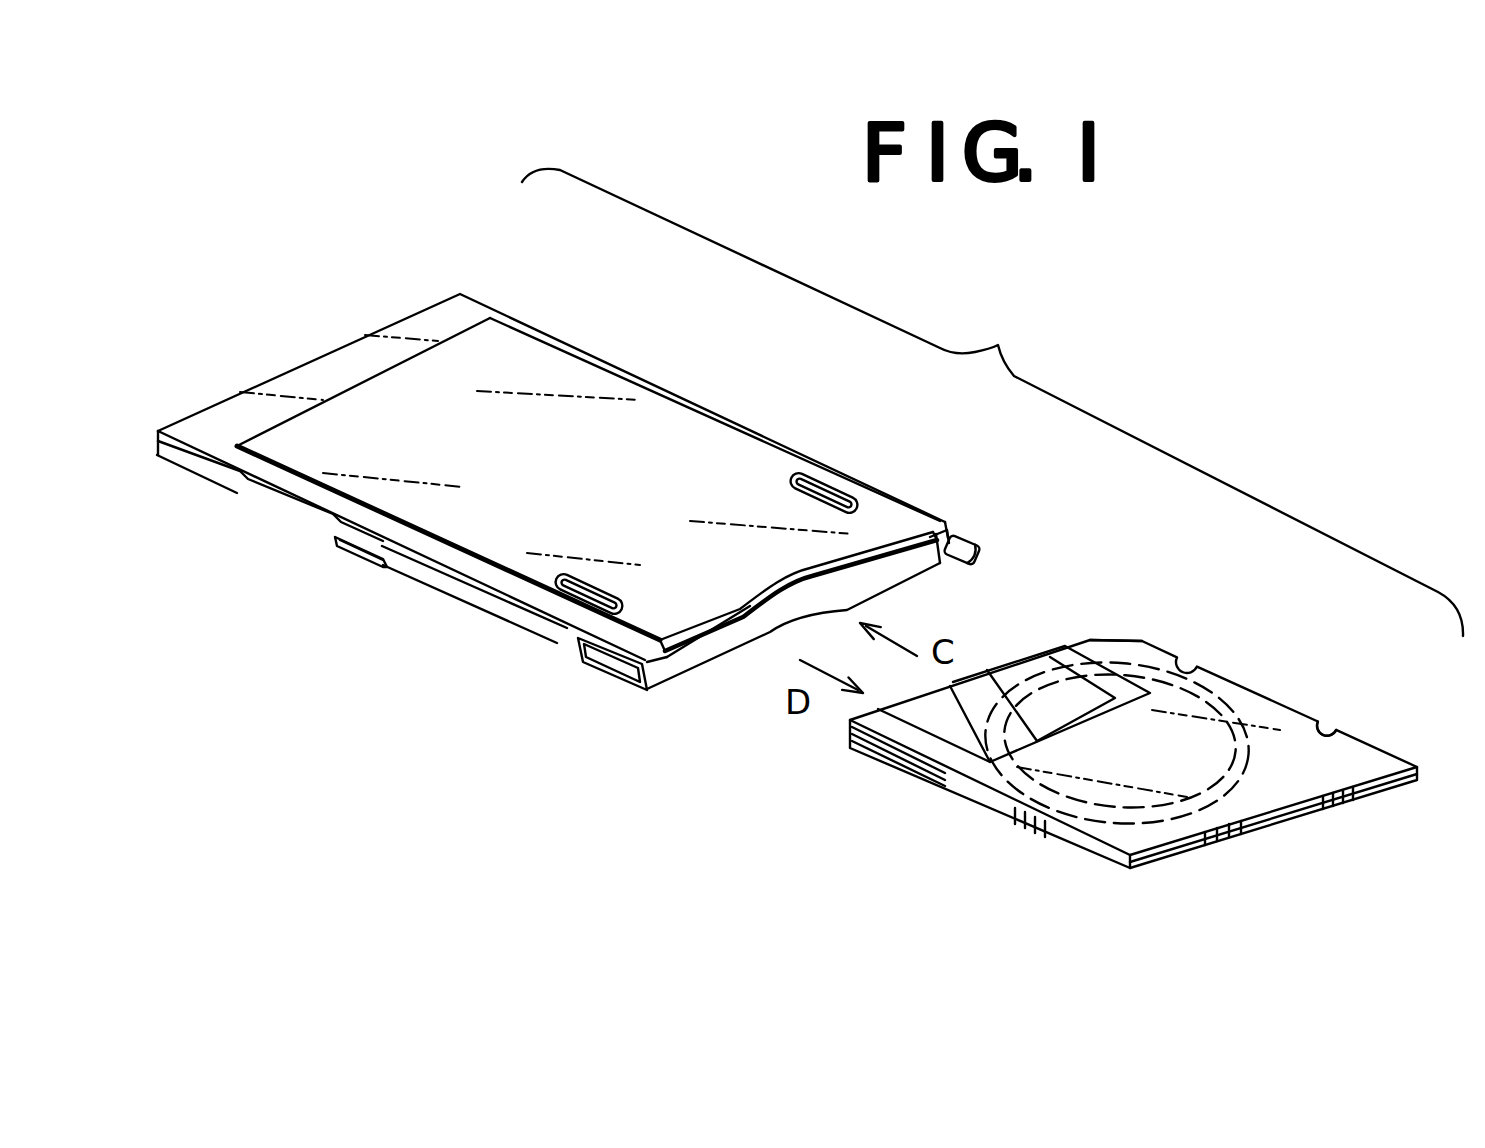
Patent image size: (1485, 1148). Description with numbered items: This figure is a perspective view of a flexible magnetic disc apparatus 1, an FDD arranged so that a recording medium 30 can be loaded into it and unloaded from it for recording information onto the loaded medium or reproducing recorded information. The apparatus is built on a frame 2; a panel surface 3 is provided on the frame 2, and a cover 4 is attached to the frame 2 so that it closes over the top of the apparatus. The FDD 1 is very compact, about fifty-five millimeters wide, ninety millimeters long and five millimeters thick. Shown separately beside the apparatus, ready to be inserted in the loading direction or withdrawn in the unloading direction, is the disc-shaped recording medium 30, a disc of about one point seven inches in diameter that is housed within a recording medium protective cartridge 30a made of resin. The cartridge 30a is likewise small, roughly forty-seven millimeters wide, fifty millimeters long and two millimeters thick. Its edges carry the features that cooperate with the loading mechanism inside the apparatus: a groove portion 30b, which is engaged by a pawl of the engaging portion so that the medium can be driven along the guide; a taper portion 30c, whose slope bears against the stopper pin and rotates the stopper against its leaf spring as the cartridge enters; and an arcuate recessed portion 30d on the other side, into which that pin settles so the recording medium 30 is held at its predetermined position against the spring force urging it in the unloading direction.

The flexible magnetic disc apparatus 1 is at (592, 337).
The frame 2 is at (618, 677).
The panel surface 3 is at (938, 566).
The cover 4 is at (707, 453).
The disc-shaped recording medium 30 is at (1245, 800).
The recording medium protective cartridge 30a is at (1333, 765).
The groove portion 30b is at (923, 780).
The taper portion 30c is at (1112, 640).
The arcuate recessed portion 30d is at (1328, 723).